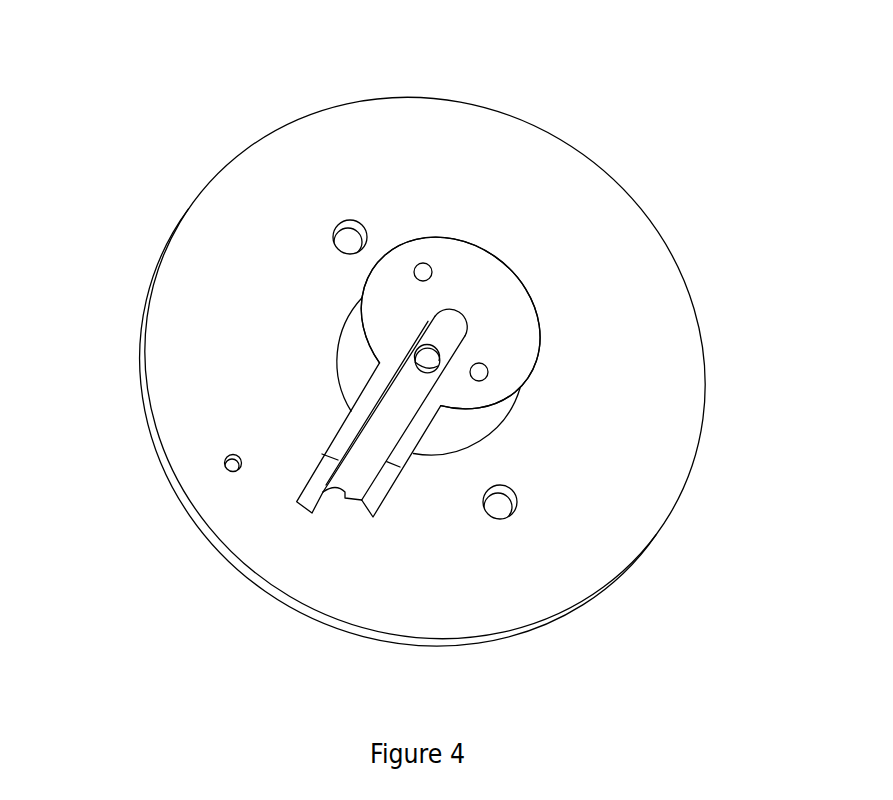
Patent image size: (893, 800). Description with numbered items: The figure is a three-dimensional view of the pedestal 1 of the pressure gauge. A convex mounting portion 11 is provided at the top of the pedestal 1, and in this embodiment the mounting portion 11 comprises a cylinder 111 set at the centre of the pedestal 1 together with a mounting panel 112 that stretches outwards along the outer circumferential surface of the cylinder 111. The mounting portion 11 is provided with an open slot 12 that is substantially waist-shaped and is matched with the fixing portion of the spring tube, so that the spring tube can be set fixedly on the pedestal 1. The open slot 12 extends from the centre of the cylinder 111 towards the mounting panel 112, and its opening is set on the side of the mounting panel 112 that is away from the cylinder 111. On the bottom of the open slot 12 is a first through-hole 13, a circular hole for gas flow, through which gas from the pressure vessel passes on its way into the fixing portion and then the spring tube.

The pedestal 1 is at (633, 137).
The mounting portion 11 is at (403, 232).
The cylinder 111 is at (520, 322).
The open slot 12 is at (403, 398).
The mounting panel 112 is at (347, 425).
The first through-hole 13 is at (410, 358).